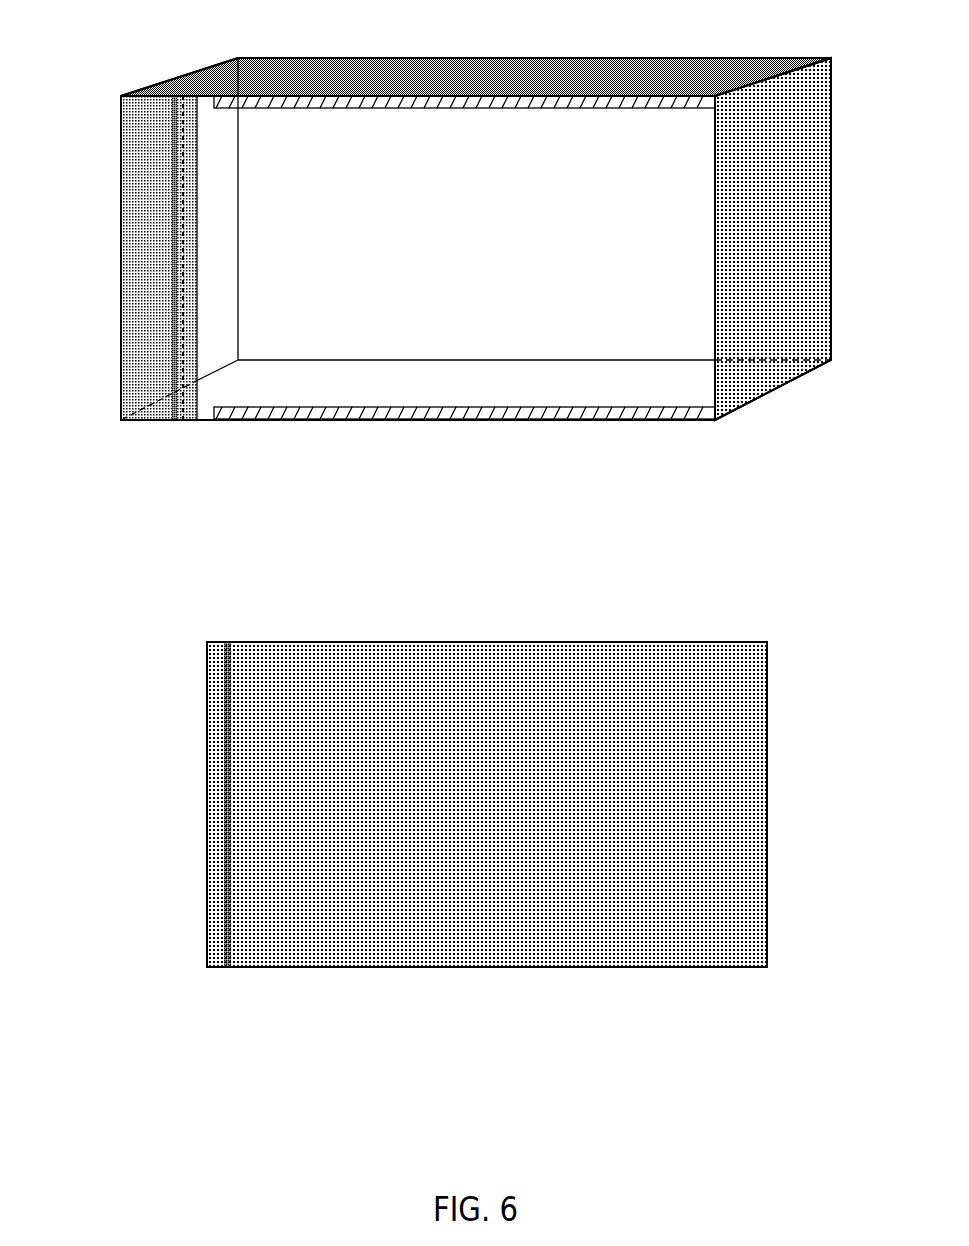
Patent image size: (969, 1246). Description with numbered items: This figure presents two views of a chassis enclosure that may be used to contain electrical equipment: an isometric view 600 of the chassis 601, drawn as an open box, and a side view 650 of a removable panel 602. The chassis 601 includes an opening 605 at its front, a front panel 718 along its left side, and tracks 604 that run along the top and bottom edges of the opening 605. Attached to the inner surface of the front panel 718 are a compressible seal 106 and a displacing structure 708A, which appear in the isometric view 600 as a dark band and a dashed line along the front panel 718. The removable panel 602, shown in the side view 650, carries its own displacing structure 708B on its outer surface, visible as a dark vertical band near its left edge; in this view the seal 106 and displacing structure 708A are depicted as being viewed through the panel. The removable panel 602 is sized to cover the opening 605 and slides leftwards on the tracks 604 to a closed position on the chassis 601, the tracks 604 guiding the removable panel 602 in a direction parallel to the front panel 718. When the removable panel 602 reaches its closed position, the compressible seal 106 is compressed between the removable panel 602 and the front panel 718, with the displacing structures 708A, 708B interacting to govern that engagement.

The isometric view 600 is at (118, 58).
The chassis 601 is at (664, 72).
The removable panel 602 is at (332, 967).
The tracks 604 is at (393, 108).
The opening 605 is at (605, 385).
The compressible seal 106 is at (175, 420).
The displacing structure 708A is at (183, 420).
The displacing structure 708B is at (225, 940).
The front panel 718 is at (142, 345).
The side view 650 is at (118, 591).